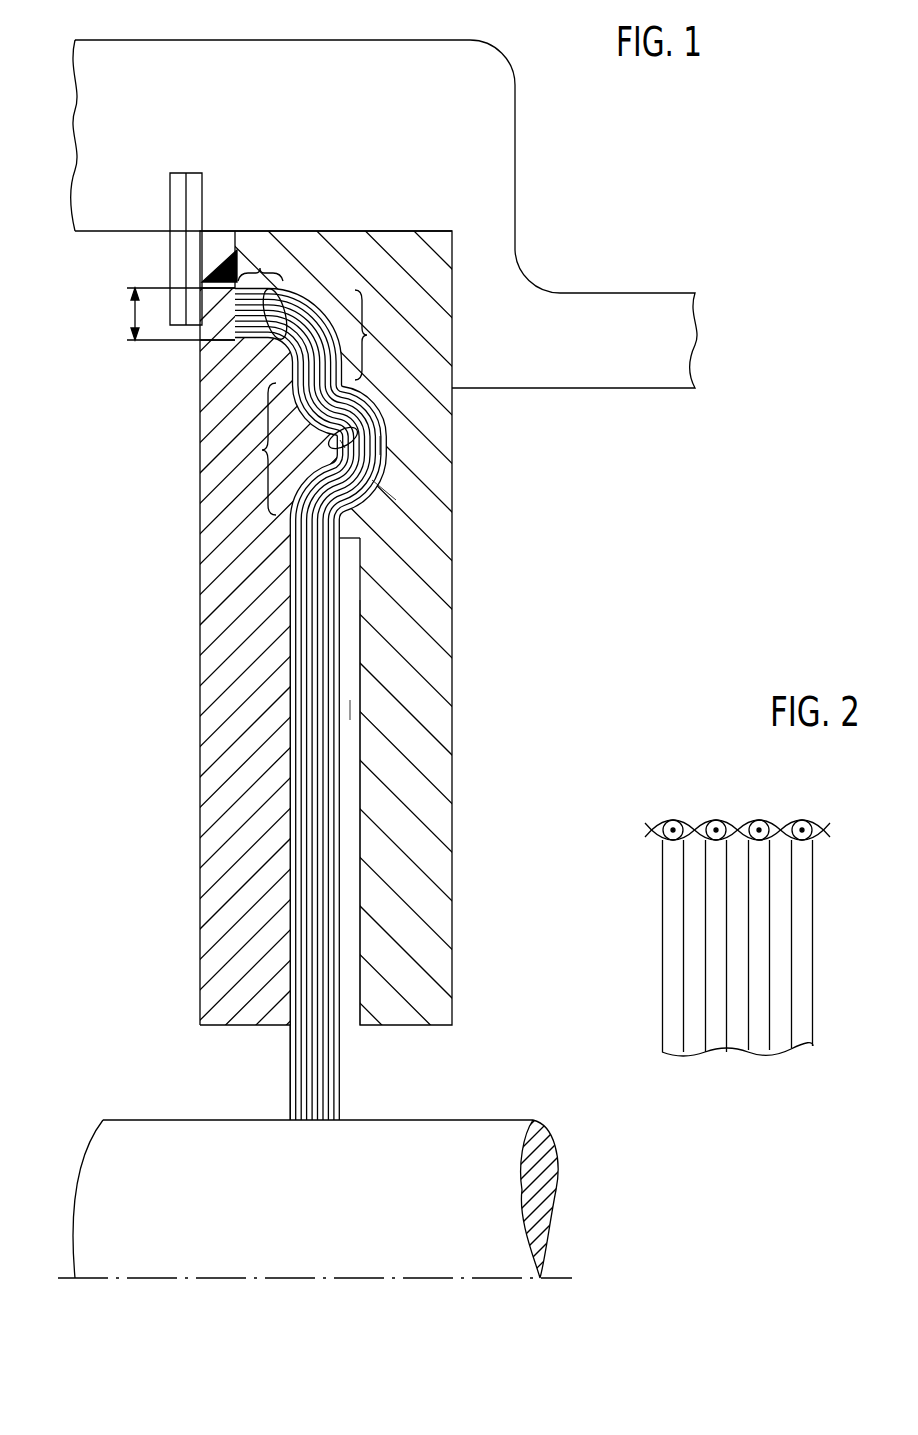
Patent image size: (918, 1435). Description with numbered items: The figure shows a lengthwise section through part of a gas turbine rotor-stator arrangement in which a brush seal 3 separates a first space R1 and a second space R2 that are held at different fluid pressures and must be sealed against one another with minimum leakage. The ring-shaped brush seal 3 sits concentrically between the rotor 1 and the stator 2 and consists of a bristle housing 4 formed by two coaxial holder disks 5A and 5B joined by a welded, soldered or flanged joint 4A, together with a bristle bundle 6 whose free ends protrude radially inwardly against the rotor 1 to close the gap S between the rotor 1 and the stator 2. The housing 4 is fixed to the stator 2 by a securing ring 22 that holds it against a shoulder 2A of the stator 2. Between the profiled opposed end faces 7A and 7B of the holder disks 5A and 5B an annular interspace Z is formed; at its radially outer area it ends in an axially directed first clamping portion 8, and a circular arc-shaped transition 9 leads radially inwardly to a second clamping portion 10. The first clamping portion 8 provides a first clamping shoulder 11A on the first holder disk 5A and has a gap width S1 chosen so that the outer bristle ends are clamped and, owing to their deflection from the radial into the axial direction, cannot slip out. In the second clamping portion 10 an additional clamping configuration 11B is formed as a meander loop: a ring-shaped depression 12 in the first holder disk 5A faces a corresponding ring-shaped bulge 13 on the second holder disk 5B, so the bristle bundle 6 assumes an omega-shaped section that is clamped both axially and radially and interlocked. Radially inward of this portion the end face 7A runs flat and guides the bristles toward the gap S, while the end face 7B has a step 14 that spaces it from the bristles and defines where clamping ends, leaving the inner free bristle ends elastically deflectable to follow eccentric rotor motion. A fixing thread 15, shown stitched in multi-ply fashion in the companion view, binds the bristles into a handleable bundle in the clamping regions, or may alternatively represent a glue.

In FIG. 1, the rotor 1 is at (136, 1140).
In FIG. 1, the stator 2 is at (498, 100).
In FIG. 1, the shoulder of the stator 2A is at (452, 277).
In FIG. 1, the brush seal 3 is at (530, 611).
In FIG. 1, the bristle housing 4 is at (333, 231).
In FIG. 1, the joint 4A is at (215, 252).
In FIG. 1, the first holder disk 5A is at (220, 600).
In FIG. 1, the second holder disk 5B is at (425, 522).
In FIG. 1, the bristle bundle 6 is at (345, 1050).
In FIG. 2, the bristle bundle 6 is at (773, 968).
In FIG. 1, the end face of the first holder disk 7A is at (290, 790).
In FIG. 1, the end face of the second holder disk 7B is at (352, 752).
In FIG. 1, the first clamping portion 8 is at (260, 258).
In FIG. 1, the circular arc-shaped transition 9 is at (369, 335).
In FIG. 1, the second clamping portion 10 is at (253, 449).
In FIG. 1, the first clamping shoulder 11A is at (255, 350).
In FIG. 1, the additional clamping configuration 11B is at (393, 450).
In FIG. 1, the ring-shaped depression 12 is at (405, 486).
In FIG. 1, the ring-shaped bulge 13 is at (330, 448).
In FIG. 1, the step 14 is at (361, 536).
In FIG. 1, the fixing thread 15 is at (284, 290).
In FIG. 2, the fixing thread 15 is at (780, 815).
In FIG. 1, the securing ring 22 is at (176, 258).
In FIG. 1, the gap width S1 is at (165, 314).
In FIG. 1, the gap S is at (375, 1105).
In FIG. 1, the interspace Z is at (350, 688).
In FIG. 1, the first space R1 is at (110, 649).
In FIG. 1, the second space R2 is at (575, 651).